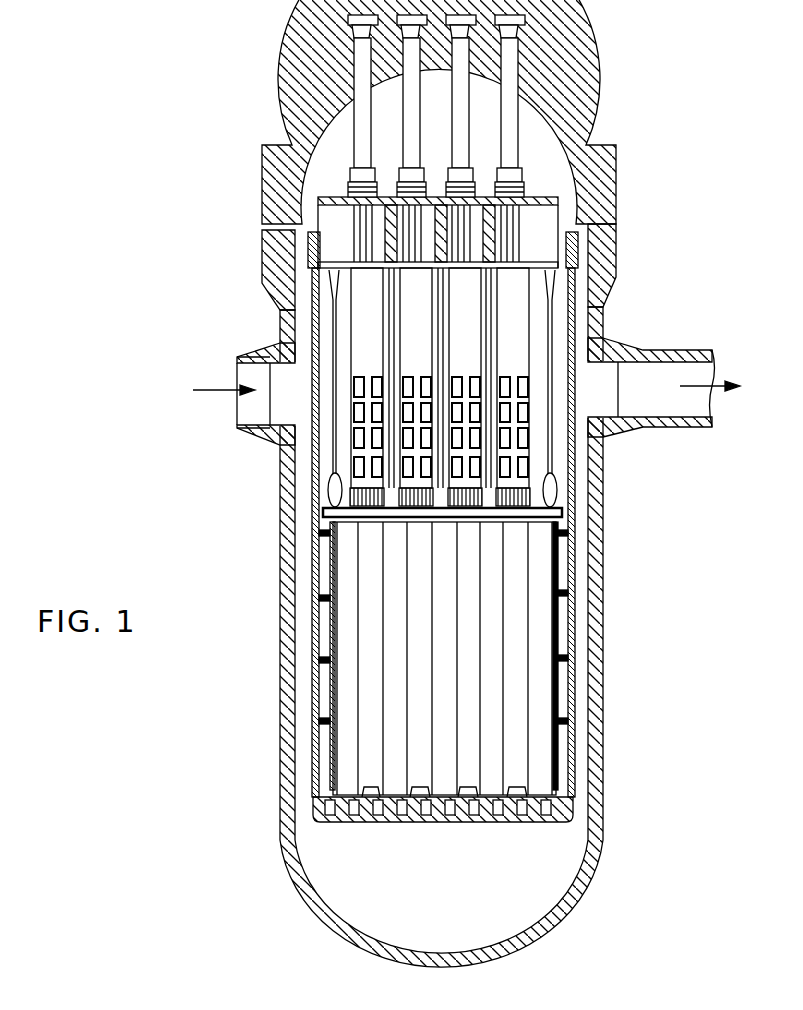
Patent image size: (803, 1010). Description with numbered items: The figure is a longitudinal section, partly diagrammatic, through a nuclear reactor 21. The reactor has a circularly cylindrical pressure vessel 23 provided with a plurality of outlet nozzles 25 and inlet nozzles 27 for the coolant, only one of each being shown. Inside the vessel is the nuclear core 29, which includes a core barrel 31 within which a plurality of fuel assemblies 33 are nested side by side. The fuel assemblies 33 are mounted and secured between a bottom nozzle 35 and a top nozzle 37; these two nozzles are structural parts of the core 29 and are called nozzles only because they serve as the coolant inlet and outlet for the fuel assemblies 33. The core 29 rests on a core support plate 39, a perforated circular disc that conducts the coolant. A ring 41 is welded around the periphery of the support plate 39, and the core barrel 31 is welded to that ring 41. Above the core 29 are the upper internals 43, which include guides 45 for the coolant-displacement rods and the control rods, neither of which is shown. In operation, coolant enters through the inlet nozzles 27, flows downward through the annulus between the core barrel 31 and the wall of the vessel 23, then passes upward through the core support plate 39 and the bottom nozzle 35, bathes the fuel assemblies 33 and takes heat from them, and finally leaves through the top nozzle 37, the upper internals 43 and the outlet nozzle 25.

The nuclear reactor 21 is at (192, 164).
The pressure vessel 23 is at (611, 173).
The outlet nozzle 25 is at (641, 346).
The inlet nozzle 27 is at (255, 434).
The nuclear core 29 is at (533, 558).
The core barrel 31 is at (576, 690).
The fuel assemblies 33 is at (472, 622).
The bottom nozzle 35 is at (312, 795).
The top nozzle 37 is at (560, 484).
The core support plate 39 is at (482, 820).
The ring 41 is at (576, 797).
The upper internals 43 is at (388, 312).
The guides 45 is at (355, 445).